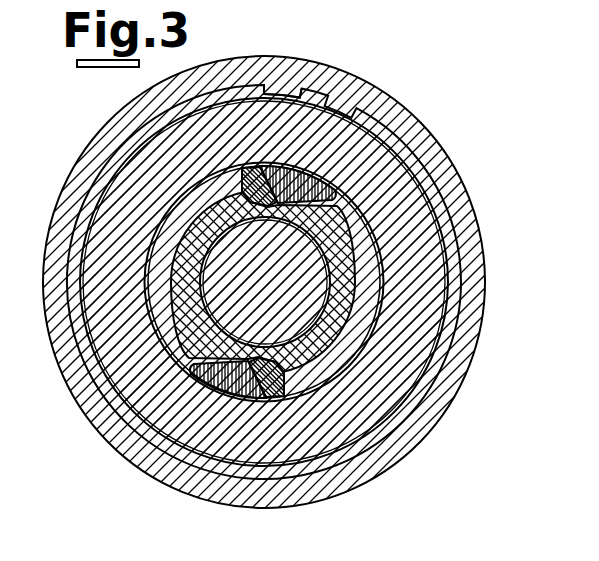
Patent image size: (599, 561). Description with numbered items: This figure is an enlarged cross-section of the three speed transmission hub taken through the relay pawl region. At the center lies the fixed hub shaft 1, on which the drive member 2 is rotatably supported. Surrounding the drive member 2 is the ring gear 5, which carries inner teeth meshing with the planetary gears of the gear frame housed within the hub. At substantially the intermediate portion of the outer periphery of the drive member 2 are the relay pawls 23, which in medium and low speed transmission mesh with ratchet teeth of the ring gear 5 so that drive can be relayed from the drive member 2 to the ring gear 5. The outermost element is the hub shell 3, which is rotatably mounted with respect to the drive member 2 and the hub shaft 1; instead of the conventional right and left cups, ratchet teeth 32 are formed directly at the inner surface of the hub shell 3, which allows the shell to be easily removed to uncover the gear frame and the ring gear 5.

The hub shaft 1 is at (307, 267).
The drive member 2 is at (357, 285).
The hub shell 3 is at (353, 80).
The ring gear 5 is at (358, 137).
The relay pawls 23 is at (332, 178).
The ratchet teeth 32 is at (292, 92).